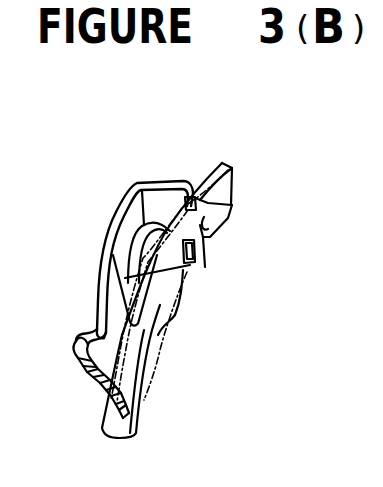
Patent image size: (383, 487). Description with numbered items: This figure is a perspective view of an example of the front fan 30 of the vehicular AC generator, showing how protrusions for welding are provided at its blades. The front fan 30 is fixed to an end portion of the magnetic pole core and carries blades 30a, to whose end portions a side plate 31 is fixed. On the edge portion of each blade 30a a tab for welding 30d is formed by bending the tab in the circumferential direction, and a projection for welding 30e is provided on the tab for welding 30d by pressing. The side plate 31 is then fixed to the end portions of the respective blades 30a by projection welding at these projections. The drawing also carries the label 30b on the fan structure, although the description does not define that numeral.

The front fan 30 is at (105, 218).
The blade 30a is at (158, 183).
The slot / belt passage portion 30b is at (123, 268).
The tab for welding 30d is at (213, 212).
The projection for welding 30e is at (188, 252).
The side plate 31 is at (215, 207).